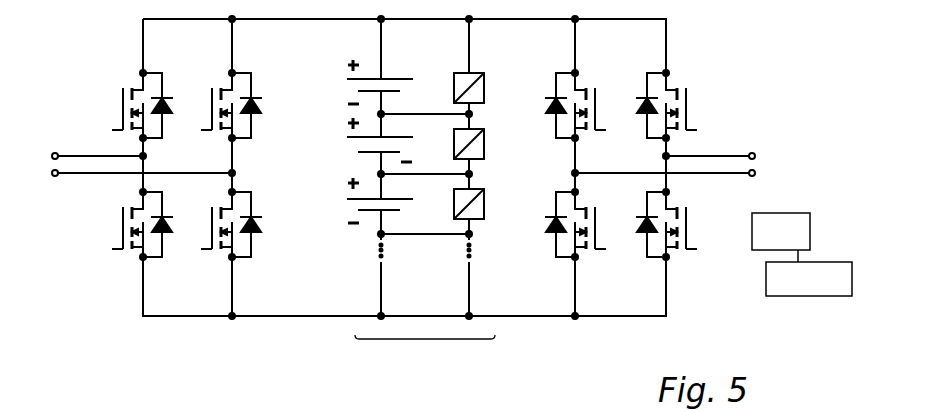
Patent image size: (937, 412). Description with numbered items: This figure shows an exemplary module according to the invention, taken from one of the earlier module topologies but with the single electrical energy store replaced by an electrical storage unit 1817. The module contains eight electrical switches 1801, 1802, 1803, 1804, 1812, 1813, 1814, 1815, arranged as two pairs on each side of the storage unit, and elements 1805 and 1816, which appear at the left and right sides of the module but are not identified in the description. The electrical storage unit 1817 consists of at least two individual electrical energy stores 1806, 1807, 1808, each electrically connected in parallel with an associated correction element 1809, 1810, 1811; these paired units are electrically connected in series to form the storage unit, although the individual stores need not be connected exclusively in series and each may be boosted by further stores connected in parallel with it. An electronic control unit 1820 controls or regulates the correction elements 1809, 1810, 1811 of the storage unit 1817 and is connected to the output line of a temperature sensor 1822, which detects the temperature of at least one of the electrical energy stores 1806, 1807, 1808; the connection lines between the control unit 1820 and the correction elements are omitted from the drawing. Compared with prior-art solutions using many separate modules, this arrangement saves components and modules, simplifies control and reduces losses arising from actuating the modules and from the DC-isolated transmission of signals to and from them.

The electrical switch 1801 is at (120, 88).
The electrical switch 1802 is at (120, 206).
The electrical switch 1803 is at (210, 84).
The electrical switch 1804 is at (210, 228).
The input terminals 1805 is at (65, 152).
The electrical energy store 1806 is at (333, 72).
The electrical energy store 1807 is at (333, 134).
The electrical energy store 1808 is at (333, 194).
The correction element 1809 is at (487, 88).
The correction element 1810 is at (487, 145).
The correction element 1811 is at (487, 200).
The electrical switch 1812 is at (602, 85).
The electrical switch 1813 is at (597, 228).
The electrical switch 1814 is at (692, 84).
The electrical switch 1815 is at (692, 204).
The output terminals 1816 is at (742, 148).
The electrical storage unit 1817 is at (423, 347).
The electronic control unit 1820 is at (787, 296).
The temperature sensor 1822 is at (810, 229).